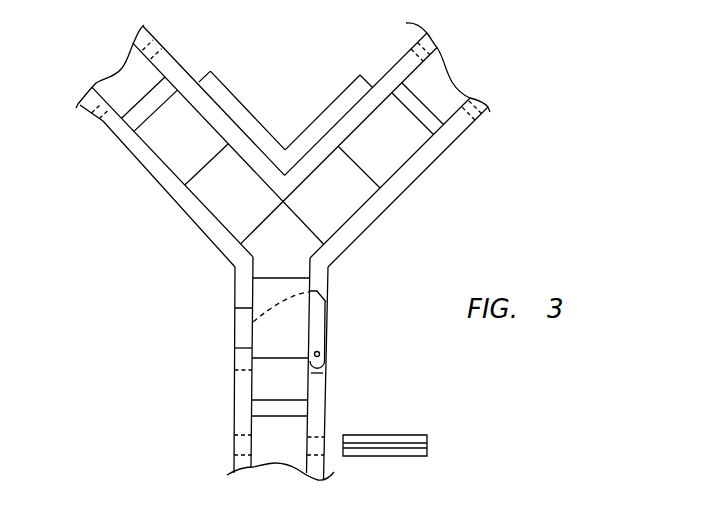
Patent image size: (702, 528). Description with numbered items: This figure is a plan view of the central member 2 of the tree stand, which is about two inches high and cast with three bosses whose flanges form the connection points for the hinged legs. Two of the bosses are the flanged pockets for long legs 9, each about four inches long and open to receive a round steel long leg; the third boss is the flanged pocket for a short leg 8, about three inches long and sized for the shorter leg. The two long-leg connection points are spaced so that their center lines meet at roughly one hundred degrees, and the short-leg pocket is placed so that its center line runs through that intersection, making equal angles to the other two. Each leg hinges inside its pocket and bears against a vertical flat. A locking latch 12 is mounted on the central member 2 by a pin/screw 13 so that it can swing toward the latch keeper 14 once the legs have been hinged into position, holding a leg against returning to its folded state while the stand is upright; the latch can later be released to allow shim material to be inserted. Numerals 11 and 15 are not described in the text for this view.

The central member 2 is at (312, 105).
The flanged pocket for a short leg 8 is at (256, 476).
The flanged pockets for long legs 9 is at (100, 61).
The cross rung 11 is at (251, 407).
The locking latch 12 is at (336, 302).
The pin/screw 13 is at (344, 335).
The latch keeper 14 is at (233, 363).
The side wall dashed joint 15 is at (325, 440).